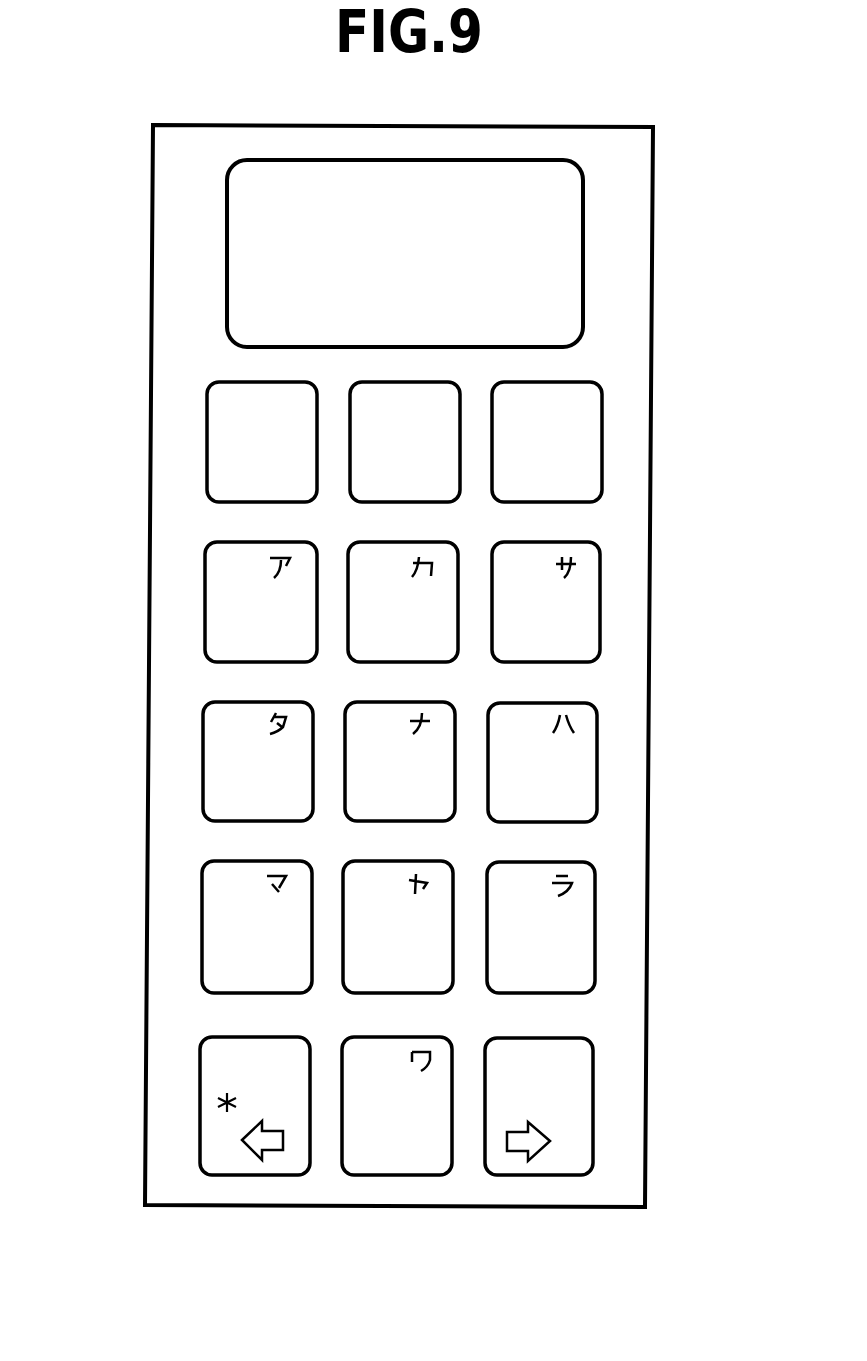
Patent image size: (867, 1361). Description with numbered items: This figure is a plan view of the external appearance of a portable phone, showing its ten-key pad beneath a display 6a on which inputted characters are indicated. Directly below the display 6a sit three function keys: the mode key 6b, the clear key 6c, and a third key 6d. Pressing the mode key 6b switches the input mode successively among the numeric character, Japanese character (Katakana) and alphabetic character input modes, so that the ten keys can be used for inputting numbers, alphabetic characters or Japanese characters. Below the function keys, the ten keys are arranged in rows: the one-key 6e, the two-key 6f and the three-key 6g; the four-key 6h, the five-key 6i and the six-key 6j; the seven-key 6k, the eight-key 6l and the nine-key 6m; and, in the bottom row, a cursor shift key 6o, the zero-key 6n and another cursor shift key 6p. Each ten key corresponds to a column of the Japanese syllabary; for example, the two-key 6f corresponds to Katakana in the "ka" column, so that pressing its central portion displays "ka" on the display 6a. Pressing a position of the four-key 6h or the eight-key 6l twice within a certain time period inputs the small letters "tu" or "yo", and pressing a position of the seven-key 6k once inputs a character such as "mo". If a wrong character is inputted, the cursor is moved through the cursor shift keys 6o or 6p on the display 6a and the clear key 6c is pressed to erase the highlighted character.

The display 6a is at (583, 252).
The mode key 6b is at (207, 410).
The clear key 6c is at (458, 384).
The power on/off key 6d is at (602, 466).
The 1 key 6e is at (205, 572).
The 2-key 6f is at (456, 546).
The 3 key 6g is at (598, 626).
The 4-key 6h is at (203, 723).
The 5 key 6i is at (453, 706).
The 6 key 6j is at (597, 786).
The 7-key 6k is at (202, 886).
The 8-key 6l is at (453, 866).
The 9 key 6m is at (595, 956).
The 0 key 6n is at (448, 1042).
The cursor shift key 6o is at (200, 1063).
The cursor shift key 6p is at (593, 1135).